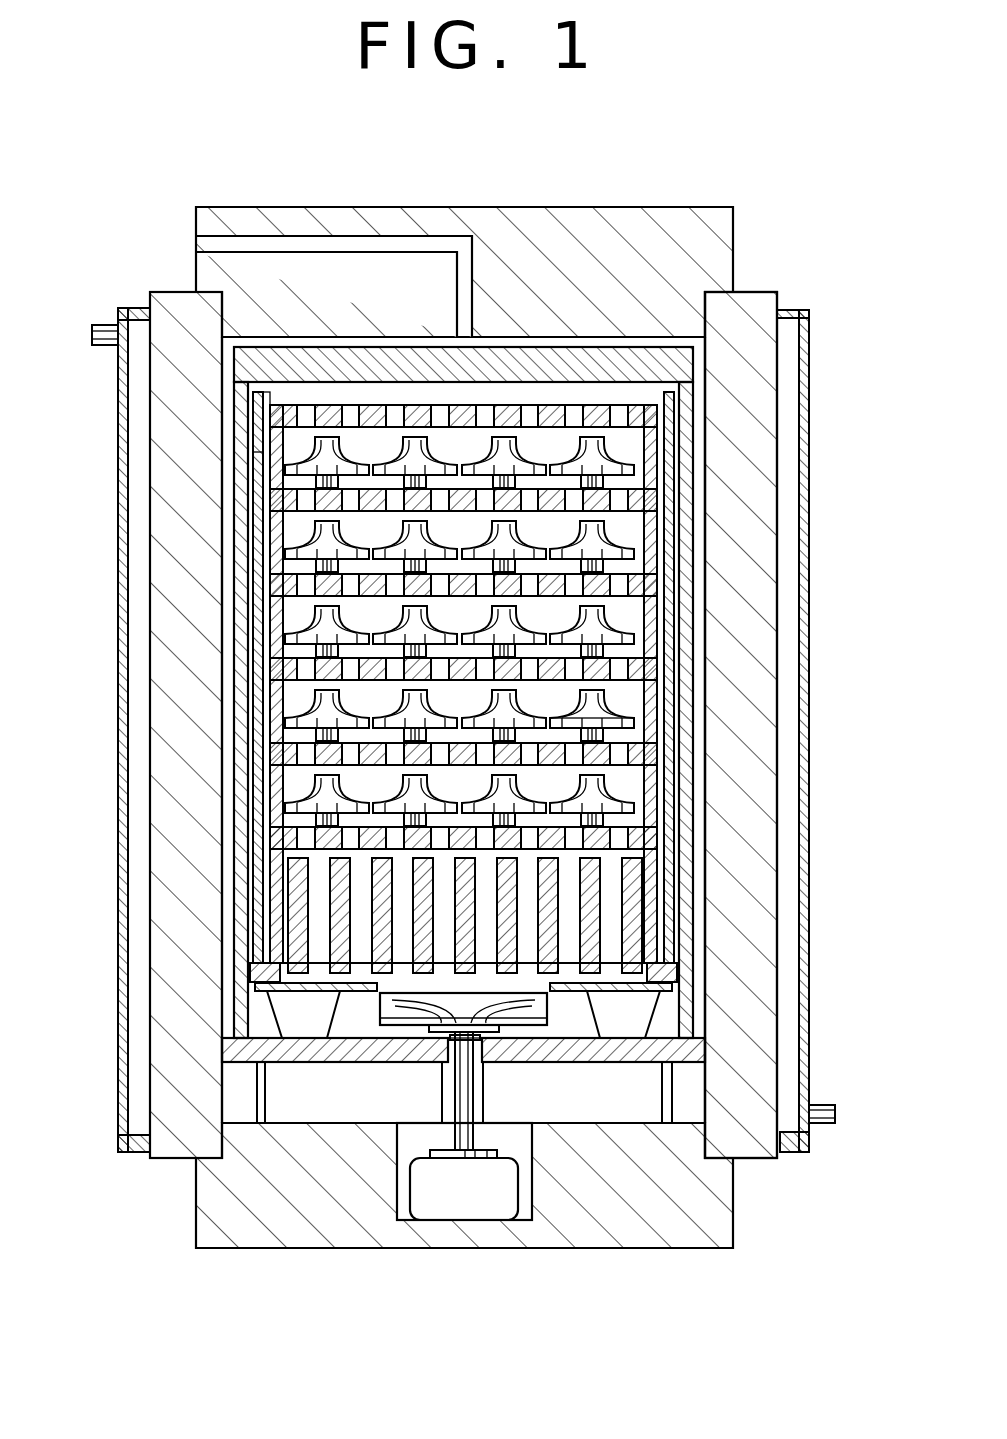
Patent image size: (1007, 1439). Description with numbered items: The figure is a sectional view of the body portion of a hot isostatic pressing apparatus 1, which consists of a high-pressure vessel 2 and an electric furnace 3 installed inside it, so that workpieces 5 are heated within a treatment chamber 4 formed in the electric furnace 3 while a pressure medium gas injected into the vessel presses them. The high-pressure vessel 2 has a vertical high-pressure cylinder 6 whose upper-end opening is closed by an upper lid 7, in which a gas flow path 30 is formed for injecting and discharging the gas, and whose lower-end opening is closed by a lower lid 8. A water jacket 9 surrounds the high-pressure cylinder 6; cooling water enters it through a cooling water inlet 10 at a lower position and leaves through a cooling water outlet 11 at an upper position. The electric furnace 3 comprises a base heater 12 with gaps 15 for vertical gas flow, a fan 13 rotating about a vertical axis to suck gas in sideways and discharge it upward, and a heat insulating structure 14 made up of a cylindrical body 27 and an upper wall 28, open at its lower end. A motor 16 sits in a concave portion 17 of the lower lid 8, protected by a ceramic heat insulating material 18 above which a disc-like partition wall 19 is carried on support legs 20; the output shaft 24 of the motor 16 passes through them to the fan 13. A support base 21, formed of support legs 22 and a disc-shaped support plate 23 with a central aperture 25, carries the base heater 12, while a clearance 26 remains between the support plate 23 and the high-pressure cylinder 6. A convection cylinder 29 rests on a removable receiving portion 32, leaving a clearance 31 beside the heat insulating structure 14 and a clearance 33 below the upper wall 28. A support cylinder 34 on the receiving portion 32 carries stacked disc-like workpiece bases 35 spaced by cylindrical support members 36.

The hot isostatic pressing apparatus 1 is at (713, 171).
The high-pressure vessel 2 is at (767, 281).
The electric furnace 3 is at (530, 342).
The treatment chamber 4 is at (398, 394).
The workpieces 5 is at (535, 626).
The high-pressure cylinder 6 is at (750, 355).
The upper lid 7 is at (663, 207).
The lower lid 8 is at (708, 1247).
The water jacket 9 is at (809, 393).
The cooling water inlet 10 is at (827, 1124).
The cooling water outlet 11 is at (100, 325).
The base heater 12 is at (642, 885).
The fan 13 is at (552, 1012).
The heat insulating structure 14 is at (700, 512).
The gaps 15 is at (358, 964).
The motor 16 is at (430, 1200).
The concave portion 17 is at (490, 1205).
The heat insulating material 18 is at (598, 1125).
The partition wall 19 is at (657, 1093).
The support legs 20 is at (687, 1093).
The support base 21 is at (306, 1320).
The support legs 22 is at (261, 1100).
The support plate 23 is at (300, 1012).
The output shaft 24 is at (475, 1136).
The aperture 25 is at (532, 983).
The clearance 26 is at (245, 1043).
The cylindrical body 27 is at (625, 712).
The upper wall 28 is at (598, 368).
The convection cylinder 29 is at (268, 523).
The gas flow path 30 is at (256, 230).
The clearance 31 is at (240, 650).
The receiving portion 32 is at (255, 978).
The clearance 33 is at (282, 394).
The support cylinder 34 is at (268, 912).
The workpiece bases 35 is at (258, 425).
The support member 36 is at (245, 565).